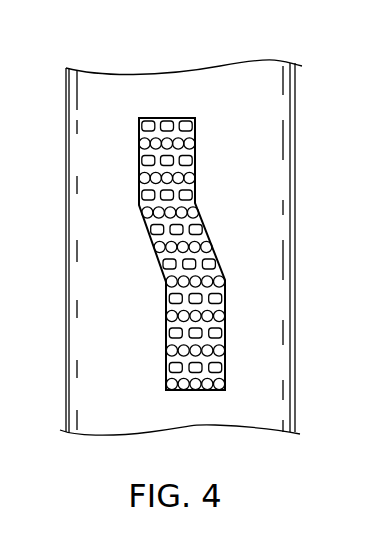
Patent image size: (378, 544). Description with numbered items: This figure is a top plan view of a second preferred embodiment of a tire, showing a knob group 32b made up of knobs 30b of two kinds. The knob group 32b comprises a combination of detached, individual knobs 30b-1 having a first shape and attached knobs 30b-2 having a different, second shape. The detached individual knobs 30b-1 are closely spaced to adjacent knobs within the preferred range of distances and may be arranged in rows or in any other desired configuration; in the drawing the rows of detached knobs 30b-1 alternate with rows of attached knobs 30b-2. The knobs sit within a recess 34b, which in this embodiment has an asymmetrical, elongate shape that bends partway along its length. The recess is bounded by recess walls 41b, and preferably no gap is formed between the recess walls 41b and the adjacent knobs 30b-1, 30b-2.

The knobs 30b is at (33, 76).
The detached individual knobs 30b-1 is at (196, 193).
The attached knobs 30b-2 is at (197, 207).
The knob group 32b is at (167, 117).
The recess 34b is at (196, 138).
The recess walls 41b is at (214, 281).